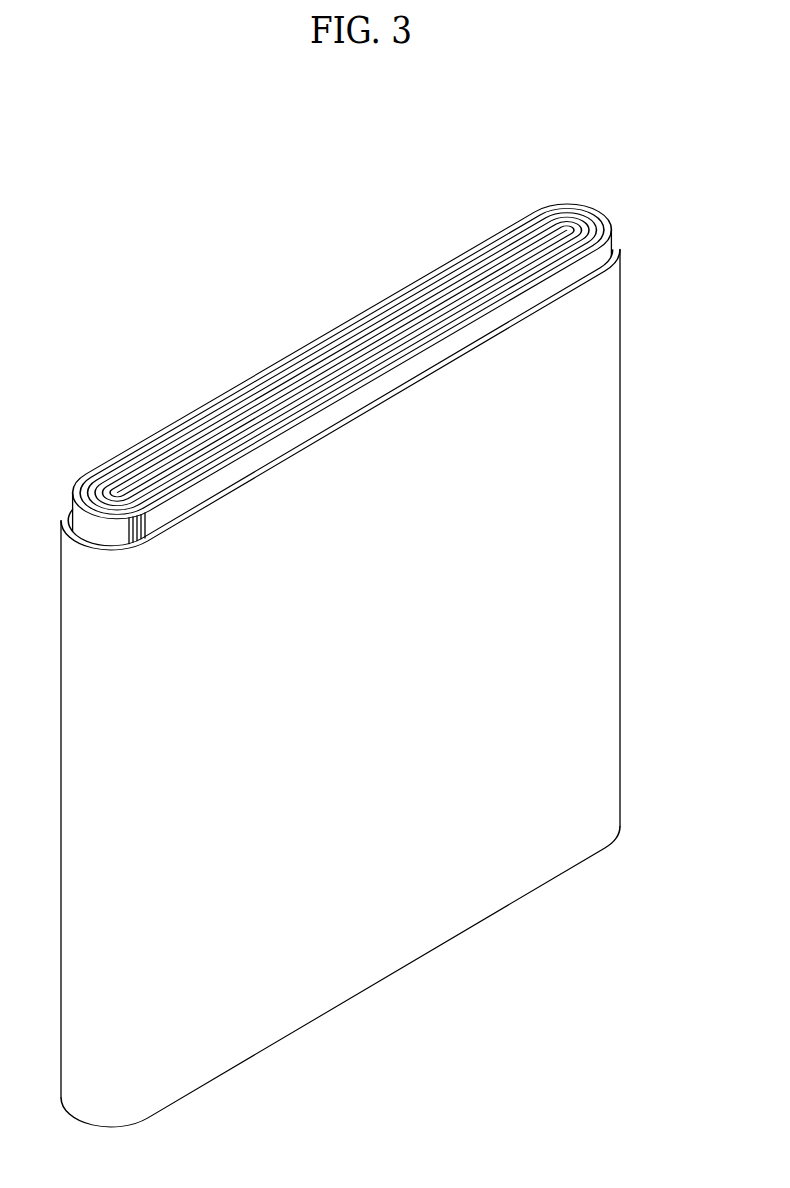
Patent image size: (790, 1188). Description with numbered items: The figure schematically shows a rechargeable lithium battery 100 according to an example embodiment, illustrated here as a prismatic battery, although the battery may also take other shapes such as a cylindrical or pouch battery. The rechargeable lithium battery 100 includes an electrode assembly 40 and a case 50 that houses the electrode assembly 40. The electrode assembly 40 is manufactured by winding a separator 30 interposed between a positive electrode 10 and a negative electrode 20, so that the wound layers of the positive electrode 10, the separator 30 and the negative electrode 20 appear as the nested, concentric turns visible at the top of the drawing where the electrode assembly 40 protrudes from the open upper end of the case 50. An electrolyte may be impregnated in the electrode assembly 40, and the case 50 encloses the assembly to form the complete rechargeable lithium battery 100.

The rechargeable lithium battery 100 is at (363, 634).
The positive electrode 10 is at (614, 216).
The negative electrode 20 is at (577, 212).
The separator 30 is at (596, 210).
The electrode assembly 40 is at (352, 304).
The case 50 is at (605, 527).